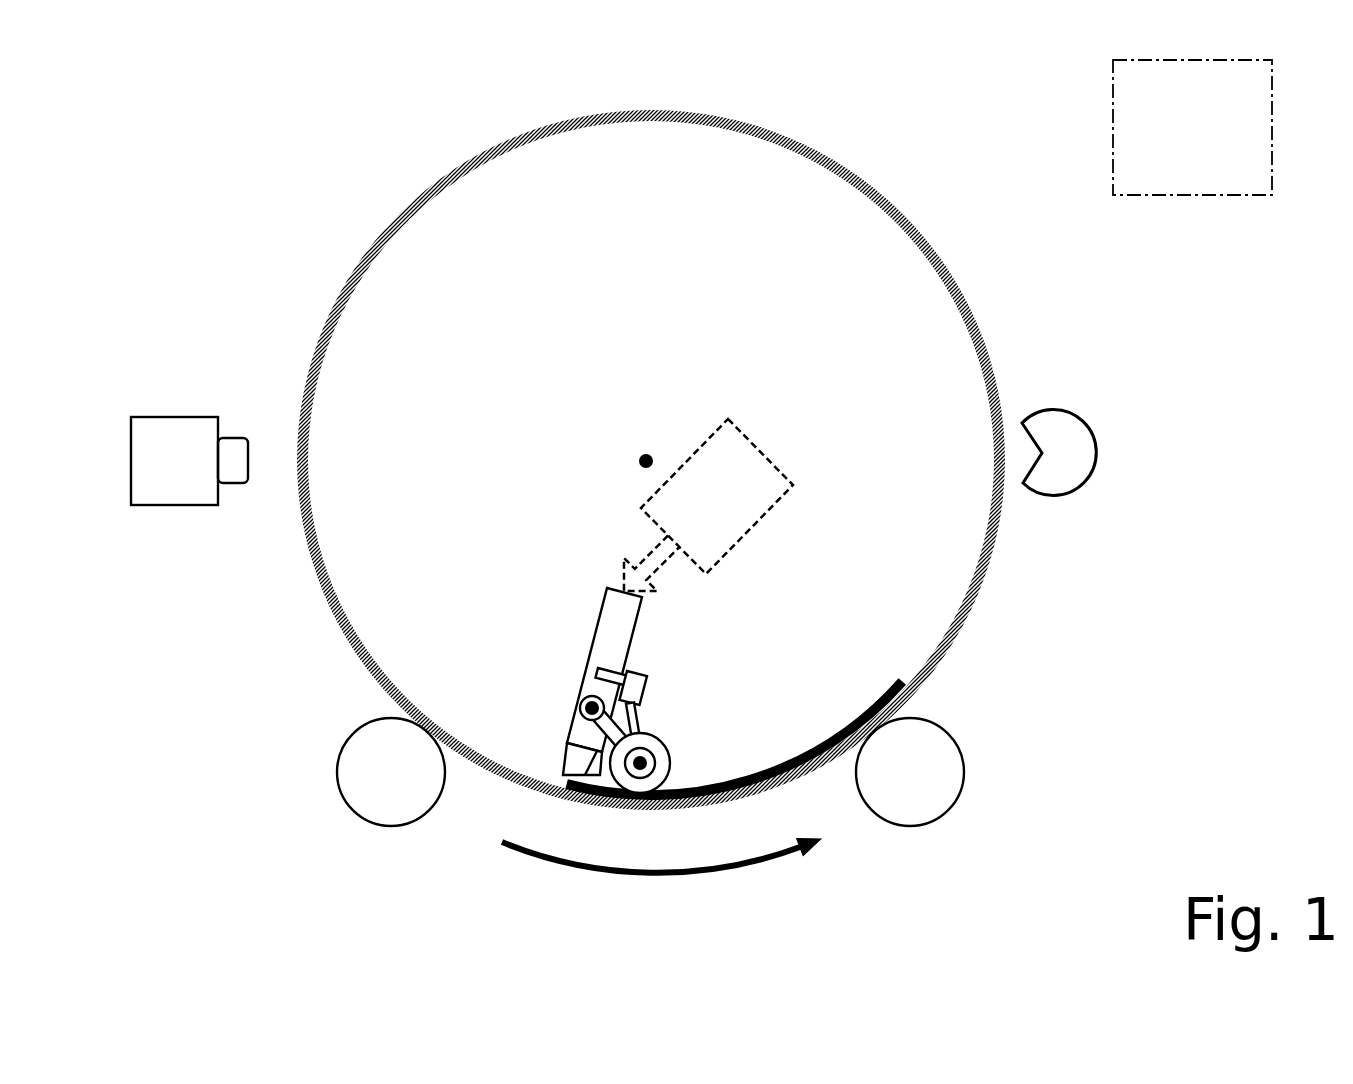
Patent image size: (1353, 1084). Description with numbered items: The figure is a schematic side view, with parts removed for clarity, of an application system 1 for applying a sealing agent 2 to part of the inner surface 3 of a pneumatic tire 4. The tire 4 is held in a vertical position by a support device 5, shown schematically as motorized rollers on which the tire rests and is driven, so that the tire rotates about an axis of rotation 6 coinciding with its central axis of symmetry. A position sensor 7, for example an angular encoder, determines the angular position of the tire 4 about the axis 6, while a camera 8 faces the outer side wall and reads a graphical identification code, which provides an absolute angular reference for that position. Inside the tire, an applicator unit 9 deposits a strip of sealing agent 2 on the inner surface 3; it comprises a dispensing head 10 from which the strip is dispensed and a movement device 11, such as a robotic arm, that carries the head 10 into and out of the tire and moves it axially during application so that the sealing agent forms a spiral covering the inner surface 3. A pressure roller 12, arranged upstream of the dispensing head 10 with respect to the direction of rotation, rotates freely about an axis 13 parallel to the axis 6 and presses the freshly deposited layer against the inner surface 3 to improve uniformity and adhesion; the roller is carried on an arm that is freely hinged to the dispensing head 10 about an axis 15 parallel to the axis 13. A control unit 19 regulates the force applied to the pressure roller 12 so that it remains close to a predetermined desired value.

The application system 1 is at (181, 111).
The sealing agent 2 is at (884, 700).
The inner surface 3 is at (657, 130).
The pneumatic tire 4 is at (947, 270).
The support device 5 is at (291, 750).
The axis of rotation 6 is at (646, 452).
The position sensor 7 is at (1068, 453).
The camera 8 is at (183, 462).
The applicator unit 9 is at (518, 396).
The dispensing head 10 is at (578, 727).
The movement device 11 is at (708, 505).
The pressure roller 12 is at (653, 750).
The axis of rotation 13 is at (640, 770).
The axis of rotation 15 is at (572, 692).
The control unit 19 is at (1192, 127).